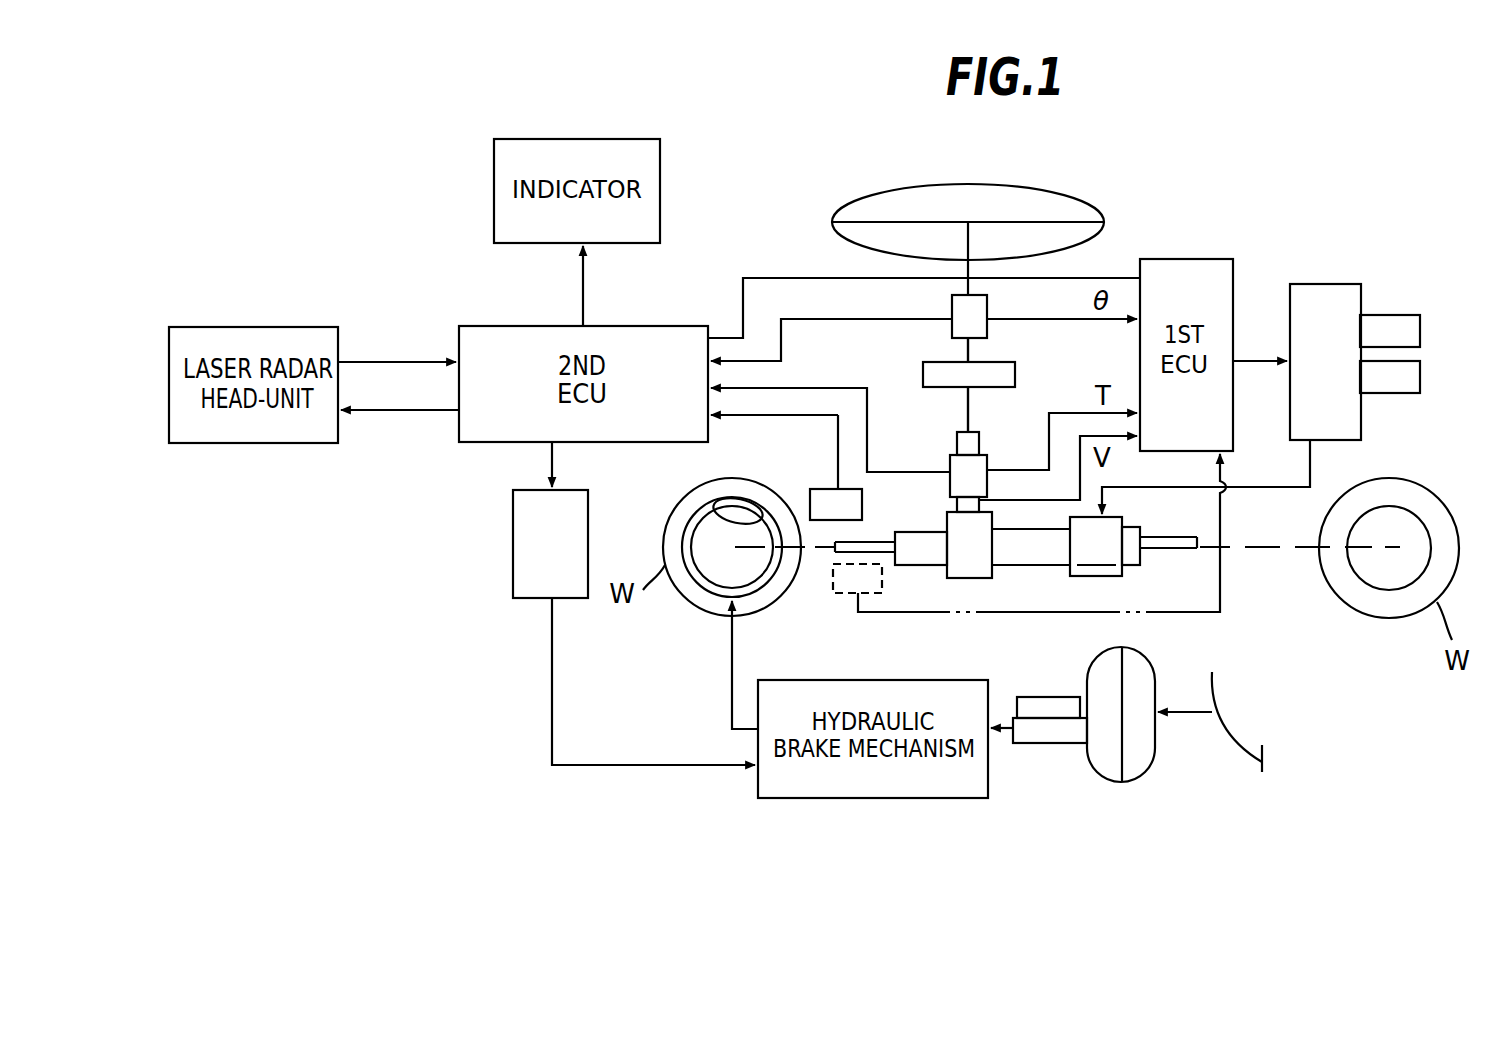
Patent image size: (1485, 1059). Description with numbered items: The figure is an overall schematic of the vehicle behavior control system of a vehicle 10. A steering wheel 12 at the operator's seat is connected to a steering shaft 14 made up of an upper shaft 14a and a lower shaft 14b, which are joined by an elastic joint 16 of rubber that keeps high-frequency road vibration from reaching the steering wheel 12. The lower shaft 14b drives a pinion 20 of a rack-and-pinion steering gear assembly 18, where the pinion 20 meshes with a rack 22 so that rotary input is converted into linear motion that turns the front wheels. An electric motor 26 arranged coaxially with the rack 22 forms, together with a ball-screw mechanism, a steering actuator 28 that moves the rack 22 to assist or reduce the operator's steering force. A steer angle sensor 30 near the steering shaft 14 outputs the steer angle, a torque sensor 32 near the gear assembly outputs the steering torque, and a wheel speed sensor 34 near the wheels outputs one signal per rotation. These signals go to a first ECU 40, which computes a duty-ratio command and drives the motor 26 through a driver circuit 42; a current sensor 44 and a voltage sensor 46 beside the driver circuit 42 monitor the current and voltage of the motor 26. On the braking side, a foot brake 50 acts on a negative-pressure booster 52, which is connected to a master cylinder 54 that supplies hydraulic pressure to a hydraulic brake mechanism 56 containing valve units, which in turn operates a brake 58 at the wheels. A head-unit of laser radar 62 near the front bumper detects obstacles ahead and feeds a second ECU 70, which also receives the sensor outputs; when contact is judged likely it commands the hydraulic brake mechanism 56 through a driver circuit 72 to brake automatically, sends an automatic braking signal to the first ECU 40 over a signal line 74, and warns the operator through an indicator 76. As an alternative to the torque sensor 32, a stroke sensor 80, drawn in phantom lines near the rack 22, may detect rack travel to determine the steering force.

The vehicle 10 is at (806, 218).
The steering wheel 12 is at (1067, 190).
The steering shaft 14 is at (982, 351).
The upper shaft 14a is at (966, 350).
The lower shaft 14b is at (966, 418).
The elastic joint 16 is at (1016, 373).
The rack-and-pinion steering gear assembly 18 is at (948, 575).
The pinion 20 is at (962, 508).
The rack 22 is at (1045, 556).
The electric motor 26 is at (1133, 546).
The steering actuator 28 is at (1126, 517).
The steer angle sensor 30 is at (951, 306).
The torque sensor 32 is at (989, 455).
The wheel speed sensor 34 is at (816, 488).
The first ECU 40 is at (1200, 258).
The driver circuit 42 is at (1326, 283).
The current sensor 44 is at (1405, 314).
The voltage sensor 46 is at (1400, 394).
The foot brake 50 is at (1216, 680).
The negative-pressure booster 52 is at (1157, 672).
The master cylinder 54 is at (1048, 696).
The hydraulic brake mechanism 56 is at (806, 680).
The brake 58 is at (707, 592).
The head-unit of laser radar 62 is at (279, 444).
The second ECU 70 is at (640, 325).
The driver circuit 72 is at (512, 545).
The signal line 74 is at (764, 277).
The indicator 76 is at (493, 203).
The stroke sensor 80 is at (842, 594).